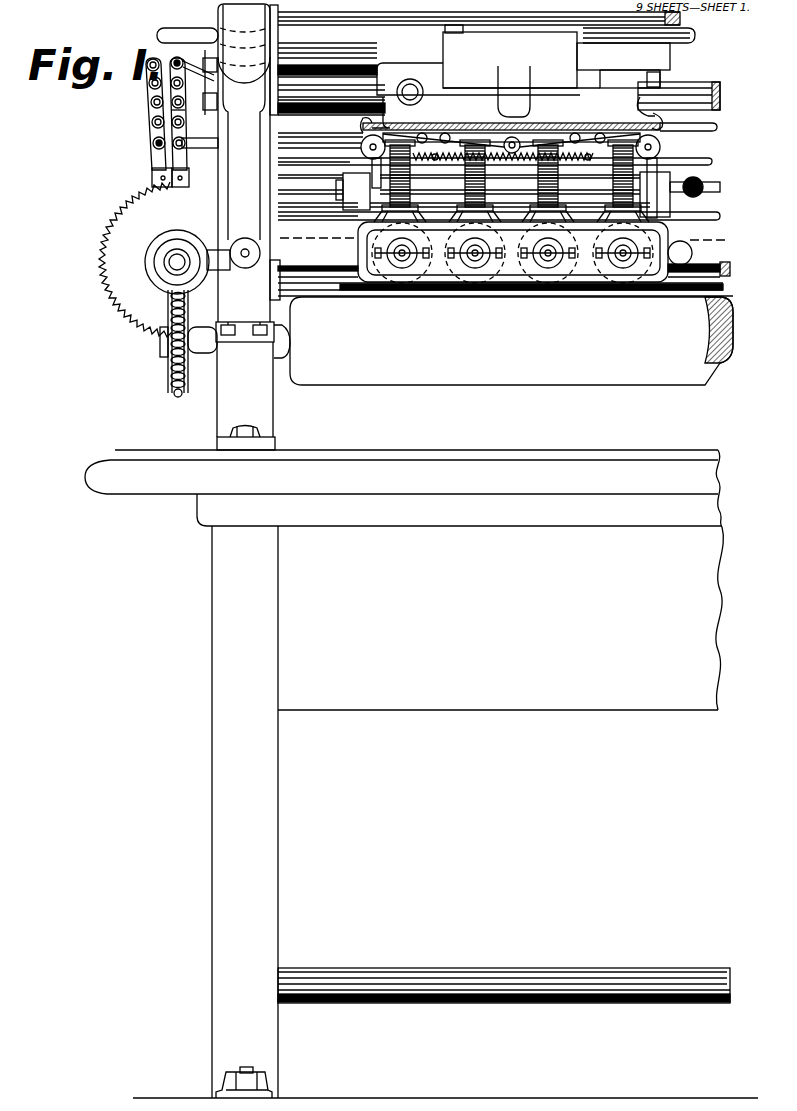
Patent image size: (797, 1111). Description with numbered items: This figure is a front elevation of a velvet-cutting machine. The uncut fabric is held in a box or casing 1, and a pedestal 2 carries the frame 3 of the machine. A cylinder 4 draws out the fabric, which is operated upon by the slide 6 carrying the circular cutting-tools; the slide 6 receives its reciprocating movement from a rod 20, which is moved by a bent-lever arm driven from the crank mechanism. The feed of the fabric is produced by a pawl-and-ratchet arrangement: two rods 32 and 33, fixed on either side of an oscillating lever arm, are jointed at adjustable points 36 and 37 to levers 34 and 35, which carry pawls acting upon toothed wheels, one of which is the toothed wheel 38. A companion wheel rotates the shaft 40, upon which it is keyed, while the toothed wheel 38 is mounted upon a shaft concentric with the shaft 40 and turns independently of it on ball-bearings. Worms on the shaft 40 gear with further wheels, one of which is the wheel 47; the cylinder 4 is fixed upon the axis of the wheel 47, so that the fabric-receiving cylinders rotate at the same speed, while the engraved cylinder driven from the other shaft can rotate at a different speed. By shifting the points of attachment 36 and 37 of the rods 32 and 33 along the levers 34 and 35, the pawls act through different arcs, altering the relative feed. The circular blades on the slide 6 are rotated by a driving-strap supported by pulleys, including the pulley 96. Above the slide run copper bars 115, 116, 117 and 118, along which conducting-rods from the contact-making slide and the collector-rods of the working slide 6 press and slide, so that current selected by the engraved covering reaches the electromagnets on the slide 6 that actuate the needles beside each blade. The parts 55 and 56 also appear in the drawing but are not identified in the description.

The box or casing 1 is at (504, 765).
The pedestal 2 is at (403, 488).
The frame 3 is at (246, 551).
The cylinder 4 is at (511, 341).
The slide 6 is at (521, 76).
The rod 20 is at (198, 22).
The rod 32 is at (207, 148).
The rod 33 is at (185, 74).
The lever 34 is at (150, 77).
The lever 35 is at (180, 110).
The point of attachment 36 is at (154, 143).
The point of attachment 37 is at (181, 64).
The toothed wheel 38 is at (135, 259).
The shaft 40 is at (170, 263).
The wheel 47 is at (172, 378).
The rail 55 is at (368, 57).
The rail 56 is at (335, 97).
The pulley 96 is at (240, 262).
The copper bar 115 is at (710, 217).
The copper bar 116 is at (709, 184).
The copper bar 117 is at (706, 158).
The copper bar 118 is at (716, 127).